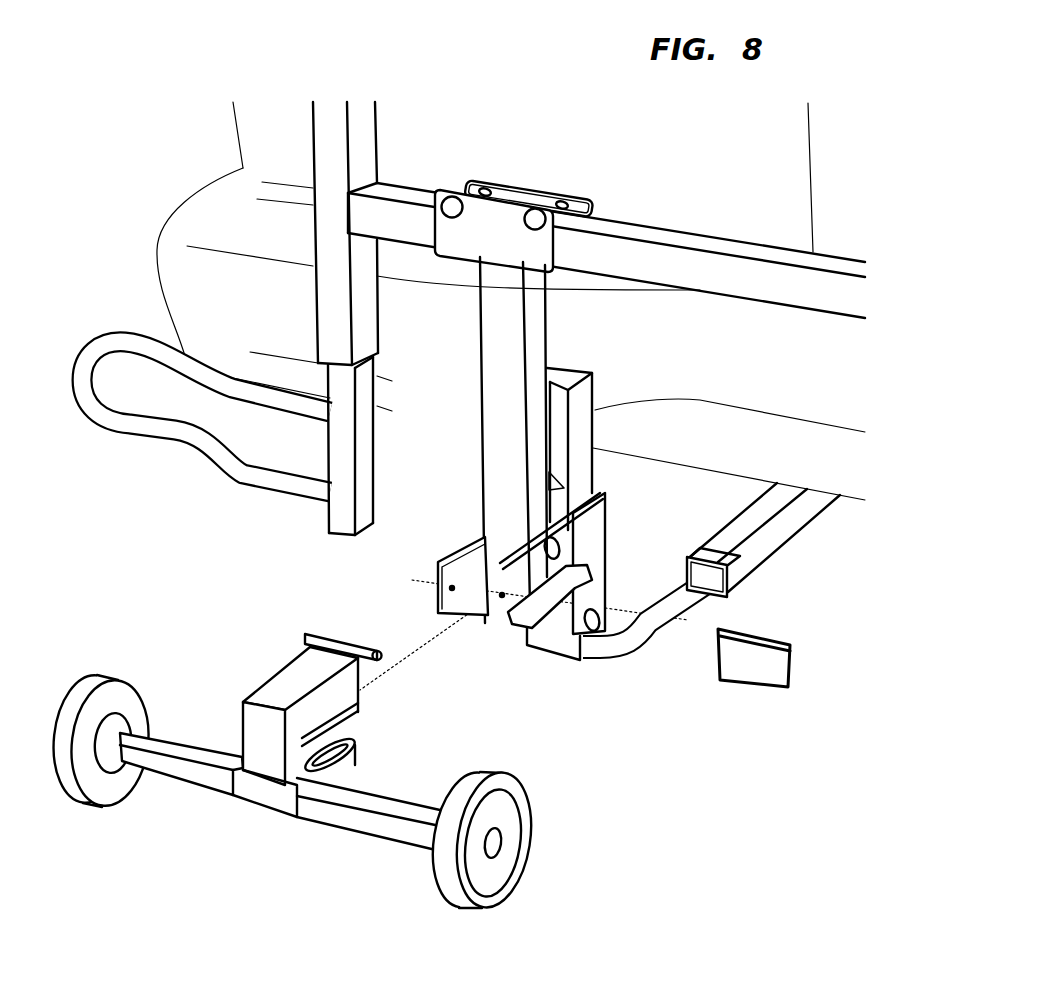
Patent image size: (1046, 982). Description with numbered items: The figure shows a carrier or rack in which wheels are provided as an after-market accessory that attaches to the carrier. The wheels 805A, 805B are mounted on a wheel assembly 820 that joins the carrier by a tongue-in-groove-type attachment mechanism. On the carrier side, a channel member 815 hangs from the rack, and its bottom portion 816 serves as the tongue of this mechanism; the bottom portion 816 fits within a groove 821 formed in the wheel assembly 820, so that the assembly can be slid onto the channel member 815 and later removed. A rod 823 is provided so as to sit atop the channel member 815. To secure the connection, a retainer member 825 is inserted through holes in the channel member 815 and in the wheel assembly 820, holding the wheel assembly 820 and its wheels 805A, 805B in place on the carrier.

The wheel 805A is at (85, 806).
The wheel 805B is at (465, 905).
The channel member 815 is at (460, 545).
The bottom portion 816 is at (462, 618).
The wheel assembly 820 is at (280, 708).
The groove 821 is at (362, 702).
The rod 823 is at (352, 640).
The retainer member 825 is at (765, 632).